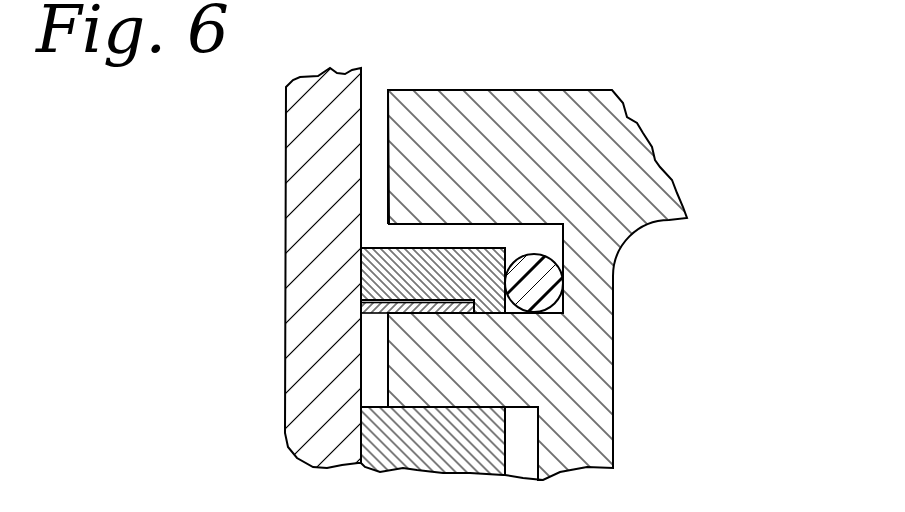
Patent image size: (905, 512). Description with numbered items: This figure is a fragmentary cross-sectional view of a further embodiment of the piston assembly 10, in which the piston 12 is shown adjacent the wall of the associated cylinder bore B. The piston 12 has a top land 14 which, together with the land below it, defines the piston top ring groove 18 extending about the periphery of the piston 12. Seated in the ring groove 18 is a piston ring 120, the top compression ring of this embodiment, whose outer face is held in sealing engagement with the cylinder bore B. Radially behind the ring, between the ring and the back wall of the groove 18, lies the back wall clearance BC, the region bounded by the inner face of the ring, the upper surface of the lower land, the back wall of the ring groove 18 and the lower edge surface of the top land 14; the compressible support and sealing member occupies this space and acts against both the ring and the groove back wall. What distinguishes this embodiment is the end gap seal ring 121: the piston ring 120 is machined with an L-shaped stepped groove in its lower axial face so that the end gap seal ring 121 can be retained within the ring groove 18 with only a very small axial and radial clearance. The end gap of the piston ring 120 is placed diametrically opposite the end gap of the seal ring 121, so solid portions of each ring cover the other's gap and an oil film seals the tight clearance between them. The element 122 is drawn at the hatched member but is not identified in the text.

The piston assembly 10 is at (596, 65).
The piston 12 is at (641, 111).
The top land 14 is at (398, 186).
The piston top ring groove 18 is at (556, 258).
The piston ring 120 is at (365, 281).
The end gap seal ring 121 is at (360, 311).
The elastomer section 122 is at (551, 300).
The cylinder bore B is at (352, 100).
The back wall clearance BC is at (552, 236).